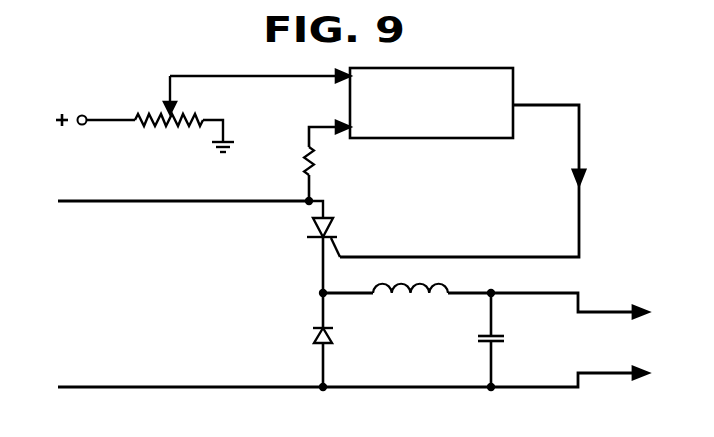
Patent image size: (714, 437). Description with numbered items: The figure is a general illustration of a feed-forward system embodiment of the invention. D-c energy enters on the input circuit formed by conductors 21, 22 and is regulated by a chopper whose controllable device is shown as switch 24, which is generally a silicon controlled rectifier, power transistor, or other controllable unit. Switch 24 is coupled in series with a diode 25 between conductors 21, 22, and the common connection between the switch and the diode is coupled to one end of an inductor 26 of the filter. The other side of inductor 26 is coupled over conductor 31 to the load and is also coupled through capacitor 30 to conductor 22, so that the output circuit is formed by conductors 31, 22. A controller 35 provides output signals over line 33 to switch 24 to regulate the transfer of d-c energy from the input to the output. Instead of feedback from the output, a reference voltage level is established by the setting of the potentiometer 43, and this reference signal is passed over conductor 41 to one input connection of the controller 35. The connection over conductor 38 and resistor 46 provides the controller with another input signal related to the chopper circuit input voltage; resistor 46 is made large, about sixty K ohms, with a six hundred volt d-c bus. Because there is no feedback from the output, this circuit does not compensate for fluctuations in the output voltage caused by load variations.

The conductor 21 is at (185, 190).
The conductor 22 is at (274, 376).
The switch 24 is at (312, 228).
The diode 25 is at (315, 329).
The inductor 26 is at (405, 304).
The capacitor 30 is at (475, 340).
The conductor 31 is at (515, 294).
The line 33 is at (580, 150).
The controller 35 is at (431, 90).
The conductor 38 is at (306, 186).
The conductor 41 is at (298, 78).
The potentiometer 43 is at (184, 115).
The resistor 46 is at (329, 146).